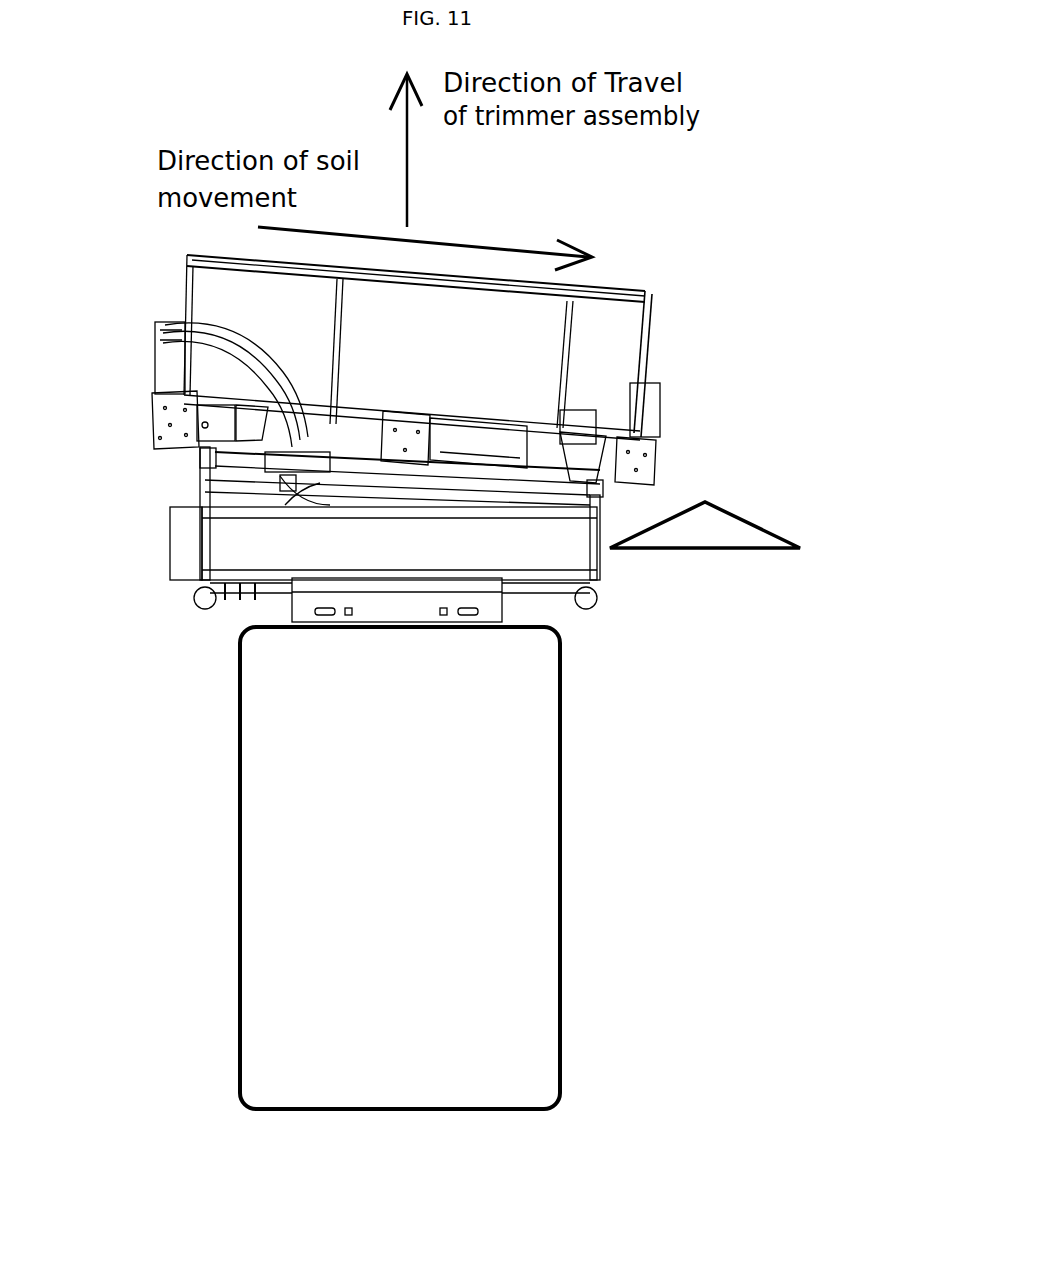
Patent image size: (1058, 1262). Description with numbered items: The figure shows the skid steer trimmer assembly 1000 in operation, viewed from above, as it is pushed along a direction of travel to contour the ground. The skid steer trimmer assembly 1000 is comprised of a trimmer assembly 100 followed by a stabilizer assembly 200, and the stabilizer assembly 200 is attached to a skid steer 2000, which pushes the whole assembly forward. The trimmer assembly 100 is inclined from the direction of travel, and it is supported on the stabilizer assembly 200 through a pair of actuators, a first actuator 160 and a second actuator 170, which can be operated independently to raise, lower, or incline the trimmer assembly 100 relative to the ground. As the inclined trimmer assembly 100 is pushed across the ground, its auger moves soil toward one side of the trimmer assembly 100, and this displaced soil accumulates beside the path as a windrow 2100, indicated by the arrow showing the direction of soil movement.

The skid steer trimmer assembly 1000 is at (106, 368).
The trimmer assembly 100 is at (674, 299).
The first actuator 160 is at (604, 487).
The second actuator 170 is at (200, 452).
The stabilizer assembly 200 is at (168, 619).
The skid steer 2000 is at (515, 870).
The windrow 2100 is at (748, 531).